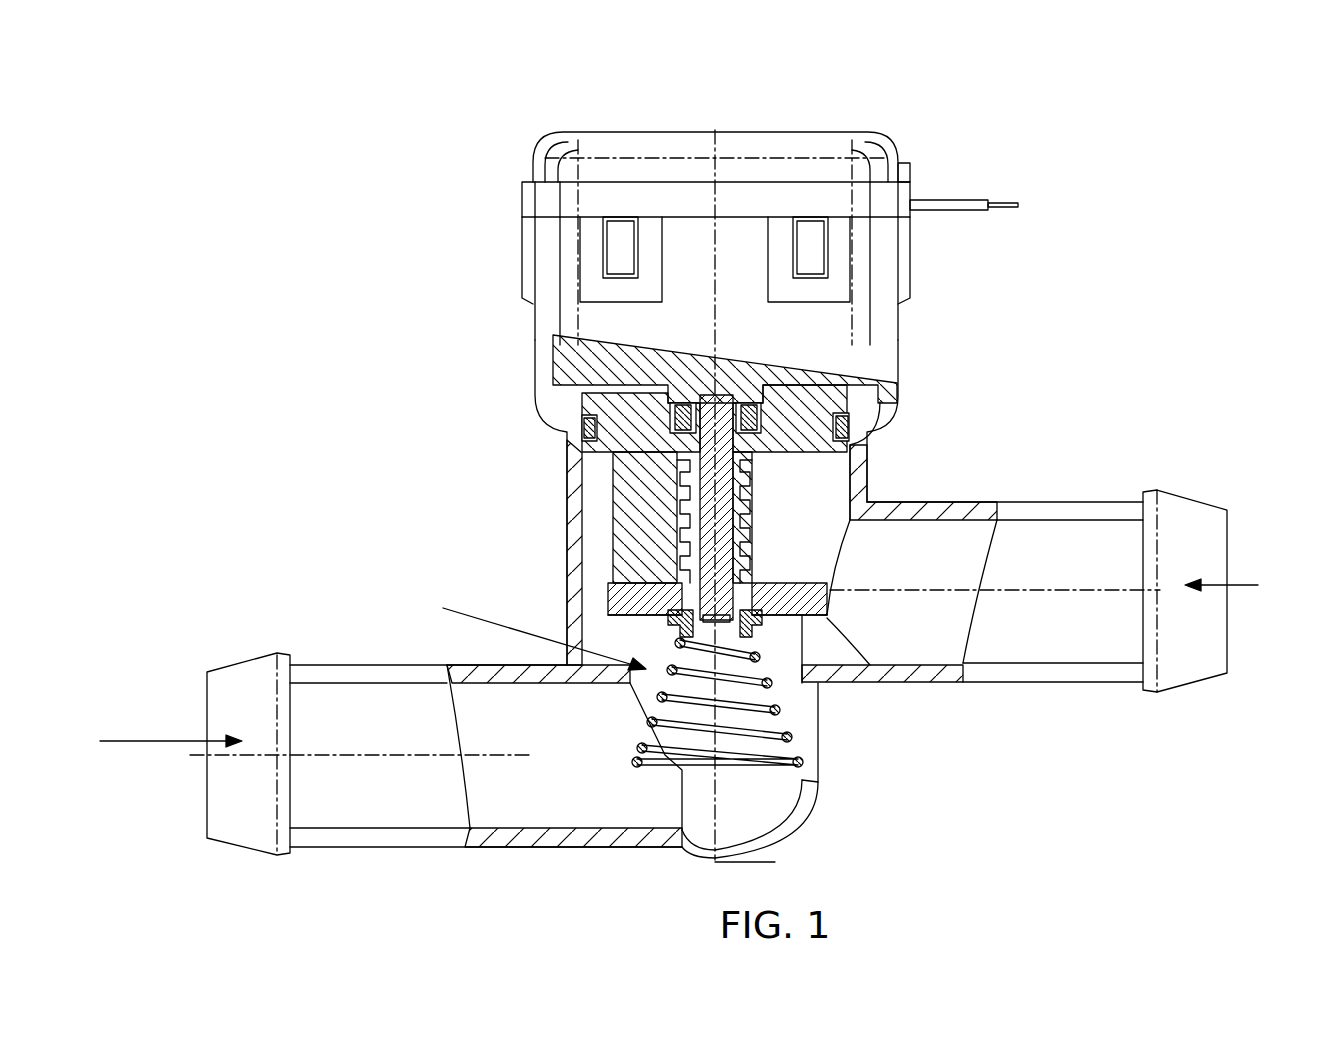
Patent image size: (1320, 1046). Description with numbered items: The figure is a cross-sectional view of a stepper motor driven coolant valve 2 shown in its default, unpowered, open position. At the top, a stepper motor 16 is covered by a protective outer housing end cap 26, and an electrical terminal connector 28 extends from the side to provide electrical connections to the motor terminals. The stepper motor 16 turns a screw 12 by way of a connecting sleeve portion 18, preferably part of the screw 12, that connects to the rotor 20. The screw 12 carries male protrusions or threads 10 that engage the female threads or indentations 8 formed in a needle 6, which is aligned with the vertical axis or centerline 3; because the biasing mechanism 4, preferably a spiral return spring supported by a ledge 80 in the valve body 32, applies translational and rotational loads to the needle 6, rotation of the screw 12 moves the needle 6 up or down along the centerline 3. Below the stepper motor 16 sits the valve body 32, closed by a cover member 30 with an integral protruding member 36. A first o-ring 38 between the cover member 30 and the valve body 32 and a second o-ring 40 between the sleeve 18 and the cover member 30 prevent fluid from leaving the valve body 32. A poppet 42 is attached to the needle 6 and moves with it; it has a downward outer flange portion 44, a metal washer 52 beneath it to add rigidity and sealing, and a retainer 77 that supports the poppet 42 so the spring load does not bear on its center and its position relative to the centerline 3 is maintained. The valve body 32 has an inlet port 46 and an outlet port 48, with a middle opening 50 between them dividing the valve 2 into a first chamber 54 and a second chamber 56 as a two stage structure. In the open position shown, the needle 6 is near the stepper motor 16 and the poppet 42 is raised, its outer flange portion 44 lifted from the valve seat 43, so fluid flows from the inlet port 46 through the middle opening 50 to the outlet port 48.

The valve 2 is at (983, 145).
The vertical axis or centerline 3 is at (715, 130).
The biasing mechanism 4 is at (770, 706).
The needle 6 is at (747, 502).
The female threads or indentations 8 is at (720, 603).
The male protrusions or threads 10 is at (822, 613).
The screw 12 is at (733, 525).
The stepper motor 16 is at (728, 332).
The connecting sleeve portion 18 is at (590, 410).
The rotor 20 is at (615, 360).
The protective outer housing end cap 26 is at (666, 179).
The electrical terminal connector 28 is at (970, 205).
The cover member 30 is at (643, 440).
The valve body 32 is at (540, 664).
The protruding member 36 is at (653, 572).
The first o-ring 38 is at (588, 432).
The second o-ring 40 is at (680, 415).
The poppet 42 is at (830, 598).
The valve seat 43 is at (762, 625).
The outer flange portion 44 is at (640, 598).
The inlet port 46 is at (1235, 585).
The outlet port 48 is at (151, 741).
The middle opening 50 is at (532, 626).
The washer 52 is at (612, 590).
The first chamber 54 is at (1068, 597).
The second chamber 56 is at (528, 754).
The retainer 77 is at (672, 607).
The ledge 80 is at (798, 763).